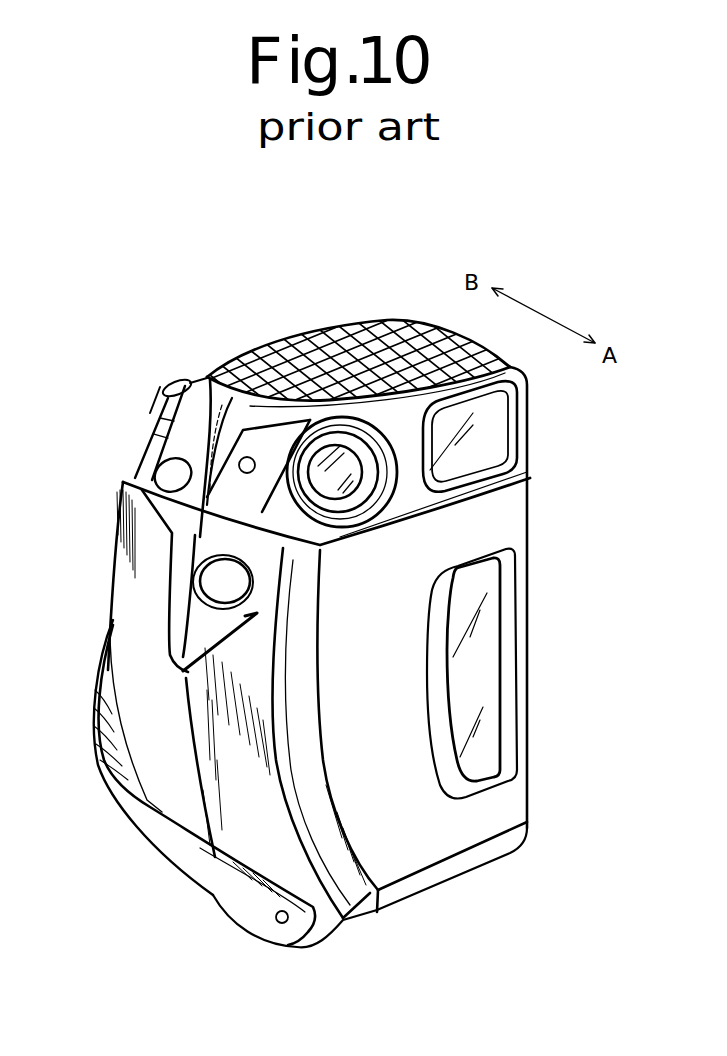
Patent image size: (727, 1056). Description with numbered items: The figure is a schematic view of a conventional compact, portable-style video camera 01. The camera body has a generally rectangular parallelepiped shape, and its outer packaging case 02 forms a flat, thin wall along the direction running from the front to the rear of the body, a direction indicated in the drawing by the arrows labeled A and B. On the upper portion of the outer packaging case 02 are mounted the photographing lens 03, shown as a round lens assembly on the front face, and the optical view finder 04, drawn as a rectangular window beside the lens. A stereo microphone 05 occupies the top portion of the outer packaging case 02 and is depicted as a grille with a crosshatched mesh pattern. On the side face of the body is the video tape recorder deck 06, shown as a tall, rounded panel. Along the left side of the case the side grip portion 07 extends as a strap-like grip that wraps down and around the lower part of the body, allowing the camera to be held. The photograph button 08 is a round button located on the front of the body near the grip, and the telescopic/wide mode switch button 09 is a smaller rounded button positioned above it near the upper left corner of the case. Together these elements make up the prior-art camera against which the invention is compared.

The video camera 01 is at (388, 288).
The outer packaging case 02 is at (110, 520).
The photographing lens 03 is at (343, 486).
The optical view finder 04 is at (482, 457).
The stereo microphone 05 is at (291, 343).
The video tape recorder deck 06 is at (537, 640).
The side grip portion 07 is at (167, 780).
The photograph button 08 is at (213, 585).
The telescopic/wide mode switch button 09 is at (163, 467).